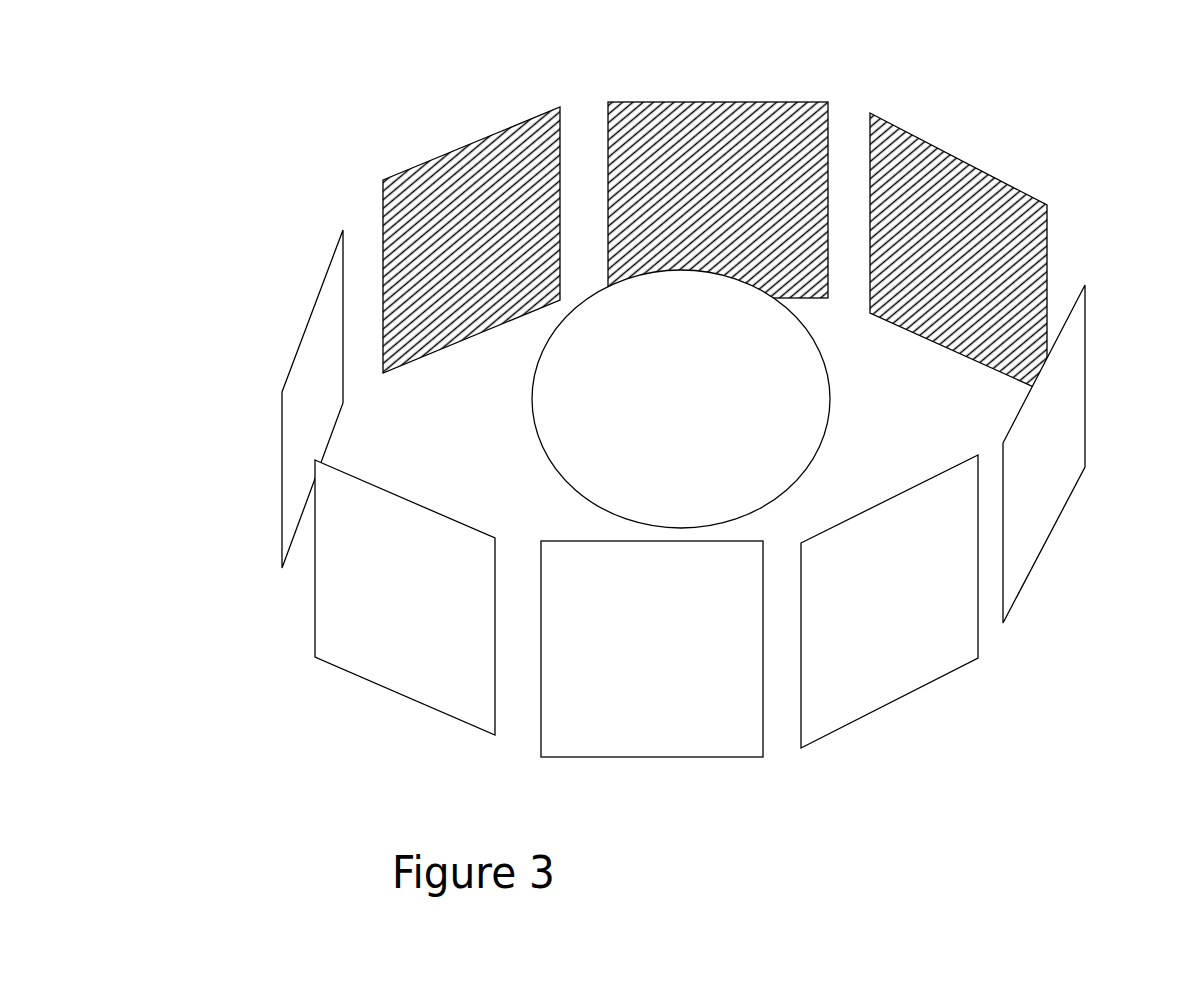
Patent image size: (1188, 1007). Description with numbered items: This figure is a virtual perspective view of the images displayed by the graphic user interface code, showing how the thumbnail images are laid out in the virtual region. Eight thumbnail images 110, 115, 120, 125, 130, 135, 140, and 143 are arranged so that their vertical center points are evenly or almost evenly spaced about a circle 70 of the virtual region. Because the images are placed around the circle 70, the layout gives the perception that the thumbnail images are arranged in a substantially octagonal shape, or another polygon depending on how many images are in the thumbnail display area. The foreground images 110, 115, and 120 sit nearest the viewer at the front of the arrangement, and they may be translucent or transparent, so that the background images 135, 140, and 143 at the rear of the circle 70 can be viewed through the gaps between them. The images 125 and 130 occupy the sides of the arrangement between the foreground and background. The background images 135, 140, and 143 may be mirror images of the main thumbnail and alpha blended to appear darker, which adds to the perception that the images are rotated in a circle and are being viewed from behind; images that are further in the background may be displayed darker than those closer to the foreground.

The circle 70 is at (787, 423).
The thumbnail image 110 is at (397, 668).
The thumbnail image 115 is at (643, 722).
The thumbnail image 120 is at (897, 672).
The thumbnail image 125 is at (305, 327).
The thumbnail image 130 is at (1045, 497).
The background image 135 is at (447, 140).
The background image 140 is at (682, 115).
The background image 143 is at (948, 150).